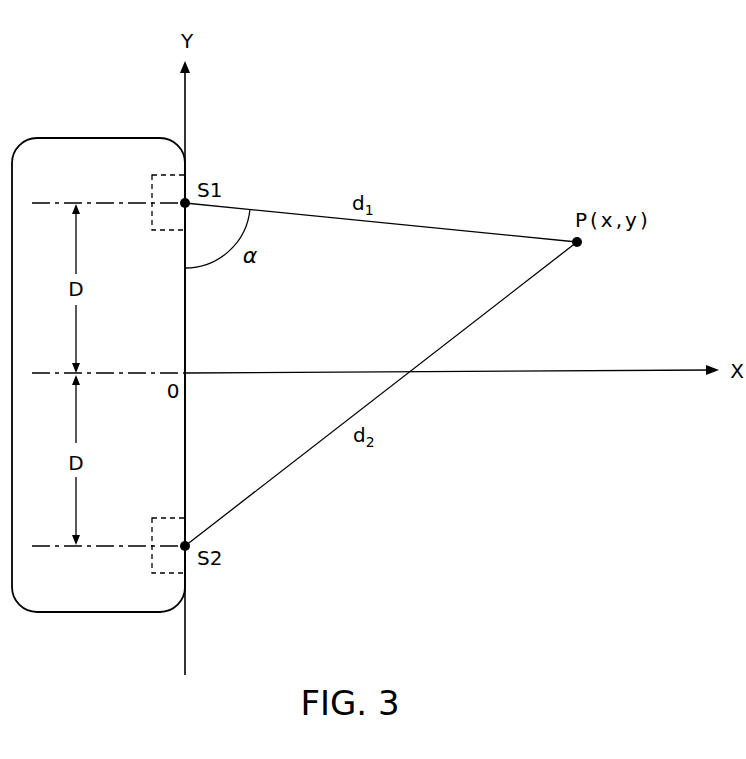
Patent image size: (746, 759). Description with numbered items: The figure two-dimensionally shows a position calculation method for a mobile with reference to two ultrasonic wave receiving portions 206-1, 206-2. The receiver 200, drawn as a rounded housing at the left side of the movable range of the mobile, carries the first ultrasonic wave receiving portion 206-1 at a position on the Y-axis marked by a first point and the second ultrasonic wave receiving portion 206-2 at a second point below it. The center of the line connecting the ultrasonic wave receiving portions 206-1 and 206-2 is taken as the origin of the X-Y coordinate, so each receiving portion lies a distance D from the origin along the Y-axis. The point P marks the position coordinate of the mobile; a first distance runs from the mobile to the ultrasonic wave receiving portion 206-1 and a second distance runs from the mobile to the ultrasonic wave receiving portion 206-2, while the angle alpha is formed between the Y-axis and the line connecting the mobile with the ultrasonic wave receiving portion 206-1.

The receiver 200 is at (53, 137).
The ultrasonic wave receiving portion 206-1 is at (170, 173).
The ultrasonic wave receiving portion 206-2 is at (173, 573).